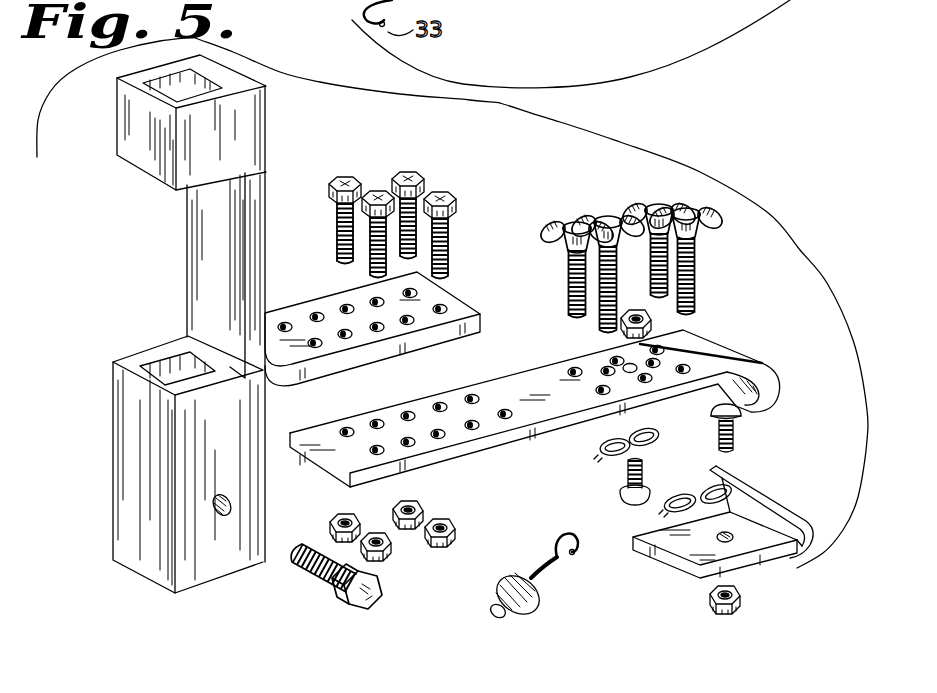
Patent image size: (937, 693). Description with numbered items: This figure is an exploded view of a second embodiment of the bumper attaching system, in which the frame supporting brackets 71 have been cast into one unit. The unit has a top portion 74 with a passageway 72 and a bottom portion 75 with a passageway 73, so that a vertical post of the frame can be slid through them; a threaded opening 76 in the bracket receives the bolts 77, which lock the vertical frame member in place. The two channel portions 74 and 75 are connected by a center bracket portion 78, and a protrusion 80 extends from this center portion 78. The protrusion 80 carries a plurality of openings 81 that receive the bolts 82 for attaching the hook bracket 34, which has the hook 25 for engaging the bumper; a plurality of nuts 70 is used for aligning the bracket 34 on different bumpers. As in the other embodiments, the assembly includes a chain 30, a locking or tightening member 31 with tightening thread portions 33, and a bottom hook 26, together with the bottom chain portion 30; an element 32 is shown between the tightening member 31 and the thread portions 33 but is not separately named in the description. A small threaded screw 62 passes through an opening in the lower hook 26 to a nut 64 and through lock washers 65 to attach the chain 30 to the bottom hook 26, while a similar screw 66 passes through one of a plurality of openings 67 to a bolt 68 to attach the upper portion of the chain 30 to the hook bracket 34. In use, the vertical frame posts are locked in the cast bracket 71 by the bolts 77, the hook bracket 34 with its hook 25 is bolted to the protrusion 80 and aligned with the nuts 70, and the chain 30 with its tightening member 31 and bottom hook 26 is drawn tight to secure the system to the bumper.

The hook 25 is at (768, 360).
The bottom hook 26 is at (805, 525).
The chain 30 is at (660, 441).
The locking or tightening member 31 is at (513, 575).
The cord 32 is at (537, 567).
The tightening thread portions 33 is at (578, 525).
The hook bracket 34 is at (548, 394).
The small threaded screw 62 is at (741, 426).
The nut 64 is at (744, 602).
The lock washers 65 is at (703, 490).
The screw 66 is at (626, 470).
The openings 67 is at (628, 364).
The bolt 68 is at (653, 322).
The nuts 70 is at (607, 233).
The frame supporting brackets 71 is at (186, 324).
The passageway 72 is at (157, 83).
The passageway 73 is at (150, 364).
The top portion 74 is at (165, 122).
The bottom portion 75 is at (181, 455).
The threaded opening 76 is at (230, 509).
The bolts 77 is at (312, 572).
The center bracket portion 78 is at (258, 220).
The protrusion 80 is at (385, 324).
The openings 81 is at (432, 295).
The bolts 82 is at (440, 182).